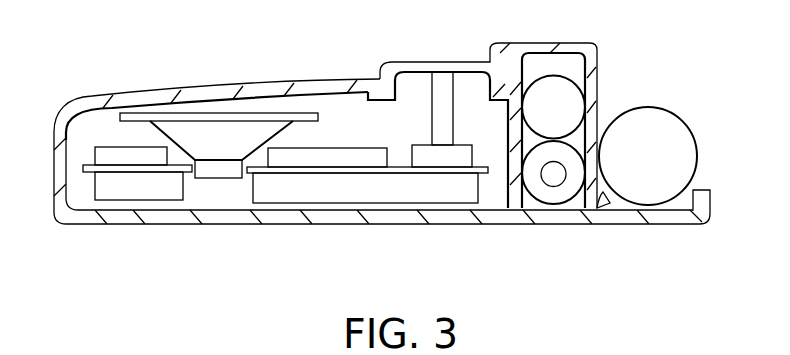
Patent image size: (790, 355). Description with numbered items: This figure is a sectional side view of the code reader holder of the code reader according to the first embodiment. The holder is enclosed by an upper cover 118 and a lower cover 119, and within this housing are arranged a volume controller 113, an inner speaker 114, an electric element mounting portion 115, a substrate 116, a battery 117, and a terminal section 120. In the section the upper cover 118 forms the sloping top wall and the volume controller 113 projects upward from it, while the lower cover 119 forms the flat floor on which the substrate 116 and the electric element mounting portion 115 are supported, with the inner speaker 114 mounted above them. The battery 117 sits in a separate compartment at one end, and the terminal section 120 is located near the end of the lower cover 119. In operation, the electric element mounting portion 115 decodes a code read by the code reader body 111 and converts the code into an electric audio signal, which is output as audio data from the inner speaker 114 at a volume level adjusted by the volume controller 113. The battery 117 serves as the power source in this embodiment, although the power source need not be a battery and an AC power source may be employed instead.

The code reader body 111 is at (673, 112).
The volume controller 113 is at (410, 63).
The inner speaker 114 is at (202, 113).
The electric element mounting portion 115 is at (120, 160).
The substrate 116 is at (173, 170).
The battery 117 is at (572, 160).
The upper cover 118 is at (285, 88).
The lower cover 119 is at (518, 218).
The terminal section 120 is at (603, 202).